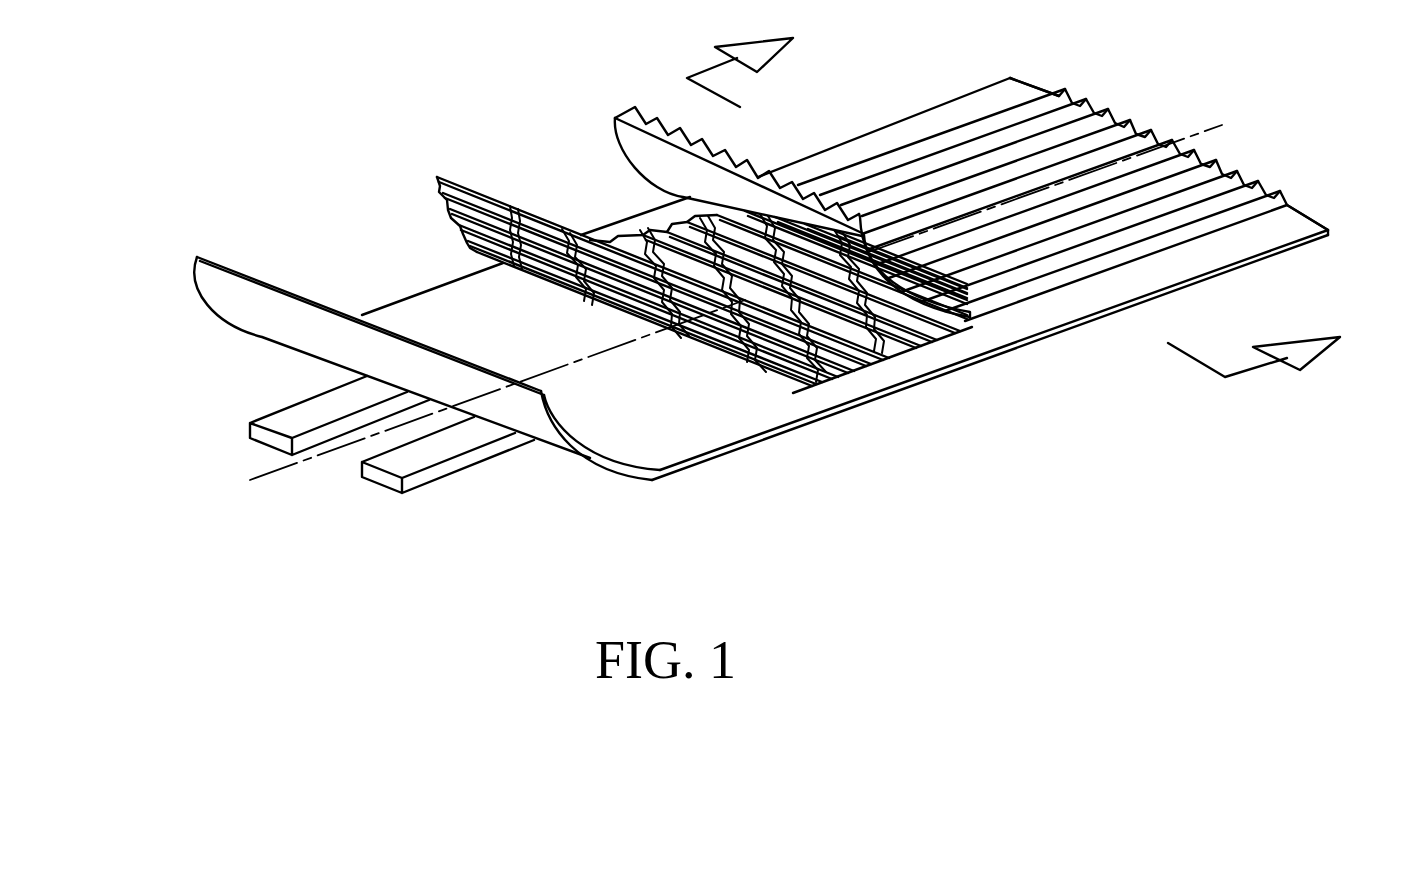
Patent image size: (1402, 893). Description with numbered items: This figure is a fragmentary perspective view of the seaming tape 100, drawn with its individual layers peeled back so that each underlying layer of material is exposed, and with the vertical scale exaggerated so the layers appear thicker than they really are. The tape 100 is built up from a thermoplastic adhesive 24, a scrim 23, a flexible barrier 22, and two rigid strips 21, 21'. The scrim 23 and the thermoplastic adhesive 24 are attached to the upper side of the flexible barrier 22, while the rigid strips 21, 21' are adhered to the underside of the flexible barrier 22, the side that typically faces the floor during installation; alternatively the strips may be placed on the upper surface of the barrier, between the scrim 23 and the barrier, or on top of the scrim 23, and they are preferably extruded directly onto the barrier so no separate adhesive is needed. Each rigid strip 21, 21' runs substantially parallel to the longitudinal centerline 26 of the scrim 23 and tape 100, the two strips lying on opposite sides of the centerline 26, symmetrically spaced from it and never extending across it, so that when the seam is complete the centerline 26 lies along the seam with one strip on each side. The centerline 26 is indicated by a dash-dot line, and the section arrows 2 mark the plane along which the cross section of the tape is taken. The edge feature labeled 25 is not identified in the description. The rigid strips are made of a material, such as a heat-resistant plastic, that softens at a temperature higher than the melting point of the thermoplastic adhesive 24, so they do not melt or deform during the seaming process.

The seaming tape 100 is at (1297, 227).
The rigid strip 21 is at (294, 402).
The rigid strip 21' is at (413, 487).
The flexible barrier 22 is at (197, 258).
The scrim 23 is at (436, 178).
The thermoplastic adhesive 24 is at (613, 120).
The plate near edge 25 is at (853, 403).
The longitudinal centerline 26 is at (1222, 125).
The section view direction arrows 2- 2 is at (1026, 193).